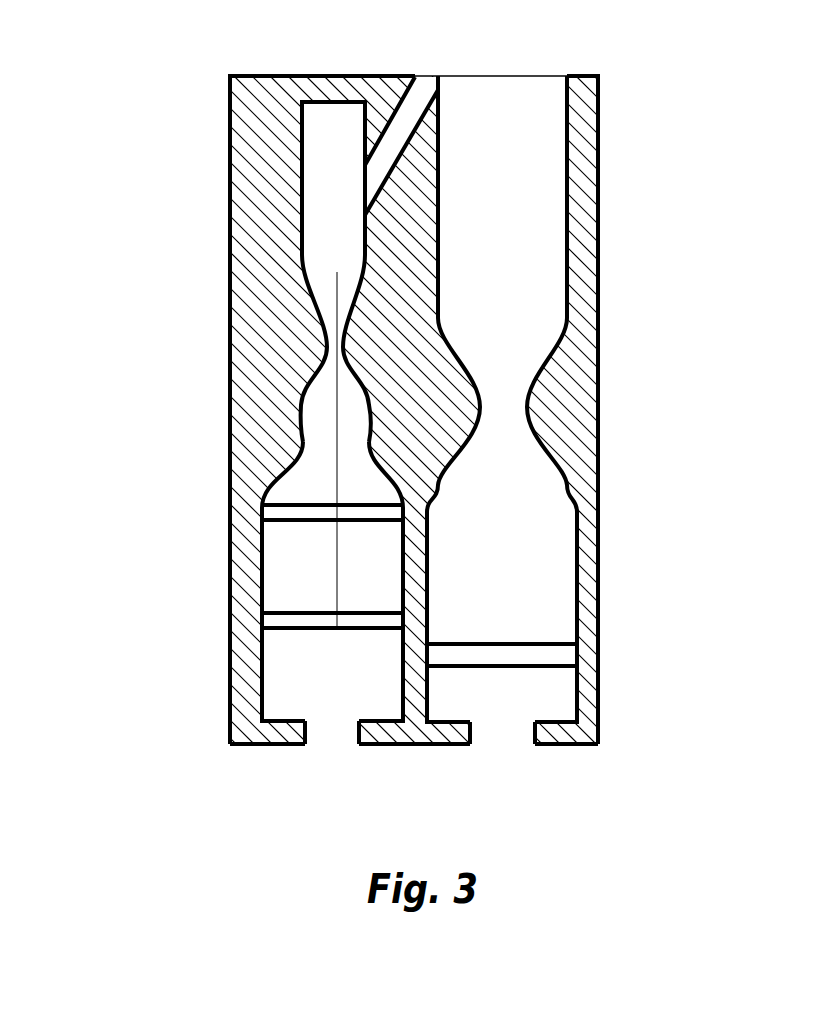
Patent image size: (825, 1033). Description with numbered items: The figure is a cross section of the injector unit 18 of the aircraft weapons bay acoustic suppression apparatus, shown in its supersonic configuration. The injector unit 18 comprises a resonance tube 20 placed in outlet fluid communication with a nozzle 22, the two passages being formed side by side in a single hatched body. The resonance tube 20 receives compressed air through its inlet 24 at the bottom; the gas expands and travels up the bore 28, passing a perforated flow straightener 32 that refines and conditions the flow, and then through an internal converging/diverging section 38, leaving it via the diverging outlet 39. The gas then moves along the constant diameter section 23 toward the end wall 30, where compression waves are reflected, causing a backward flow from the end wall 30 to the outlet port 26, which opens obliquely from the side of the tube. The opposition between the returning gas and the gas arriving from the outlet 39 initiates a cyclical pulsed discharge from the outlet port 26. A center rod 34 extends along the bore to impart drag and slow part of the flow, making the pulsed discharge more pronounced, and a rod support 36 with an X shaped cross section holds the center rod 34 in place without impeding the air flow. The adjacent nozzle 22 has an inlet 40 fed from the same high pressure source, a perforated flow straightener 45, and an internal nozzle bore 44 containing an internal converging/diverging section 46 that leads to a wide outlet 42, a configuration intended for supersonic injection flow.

The injector unit 18 is at (633, 492).
The resonance tube 20 is at (279, 277).
The nozzle 22 is at (585, 230).
The constant diameter section 23 is at (305, 198).
The inlet 24 is at (326, 746).
The outlet port 26 is at (430, 77).
The bore 28 is at (260, 548).
The end wall 30 is at (329, 101).
The perforated flow straightener 32 is at (266, 613).
The center rod 34 is at (338, 430).
The rod support 36 is at (266, 506).
The internal converging/diverging section 38 is at (323, 338).
The diverging outlet 39 is at (322, 305).
The inlet 40 is at (524, 746).
The outlet 42 is at (528, 77).
The internal nozzle bore 44 is at (567, 290).
The perforated flow straightener 45 is at (553, 653).
The internal converging/diverging section 46 is at (533, 408).